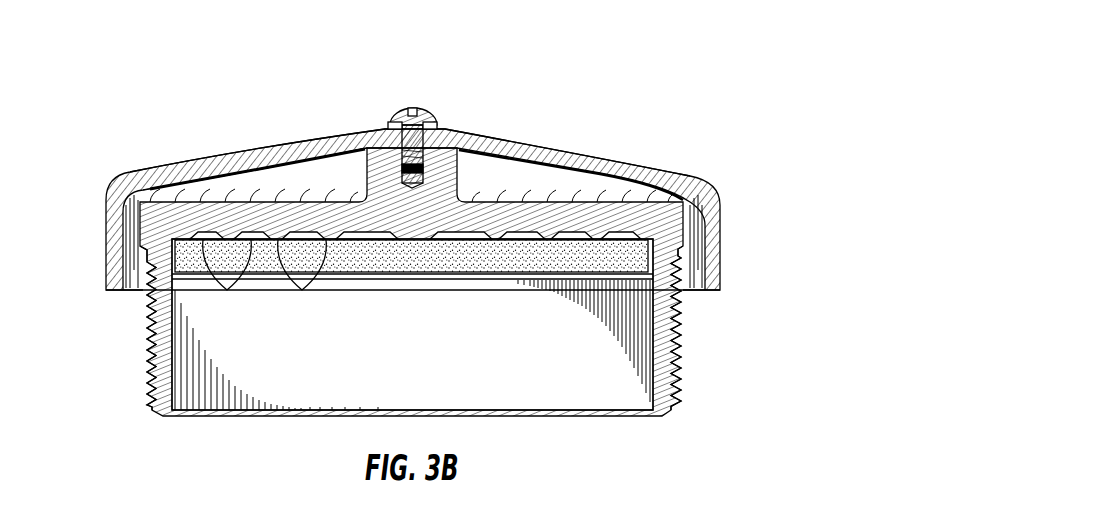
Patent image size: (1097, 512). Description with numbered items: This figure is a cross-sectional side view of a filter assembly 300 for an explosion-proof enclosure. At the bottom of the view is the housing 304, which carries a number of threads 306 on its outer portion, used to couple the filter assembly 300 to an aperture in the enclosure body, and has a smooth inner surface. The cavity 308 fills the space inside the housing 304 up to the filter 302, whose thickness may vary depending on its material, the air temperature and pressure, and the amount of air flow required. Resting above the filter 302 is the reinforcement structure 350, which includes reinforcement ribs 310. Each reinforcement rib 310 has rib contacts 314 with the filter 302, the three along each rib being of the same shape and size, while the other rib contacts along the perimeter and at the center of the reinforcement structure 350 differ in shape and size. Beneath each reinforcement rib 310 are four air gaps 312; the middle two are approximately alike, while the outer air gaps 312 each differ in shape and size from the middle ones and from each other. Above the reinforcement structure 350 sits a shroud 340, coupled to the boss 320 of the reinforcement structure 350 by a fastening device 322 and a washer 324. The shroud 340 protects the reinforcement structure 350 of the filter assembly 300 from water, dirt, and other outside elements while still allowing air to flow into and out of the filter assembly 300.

The filter assembly 300 is at (719, 70).
The filter 302 is at (482, 262).
The housing 304 is at (652, 366).
The threads 306 is at (676, 340).
The cavity 308 is at (434, 359).
The reinforcement rib 310 is at (590, 202).
The air gap 312 is at (227, 290).
The rib contact 314 is at (302, 290).
The boss 320 is at (372, 160).
The fastening device 322 is at (418, 110).
The washer 324 is at (393, 124).
The shroud 340 is at (534, 141).
The reinforcement structure 350 is at (138, 225).